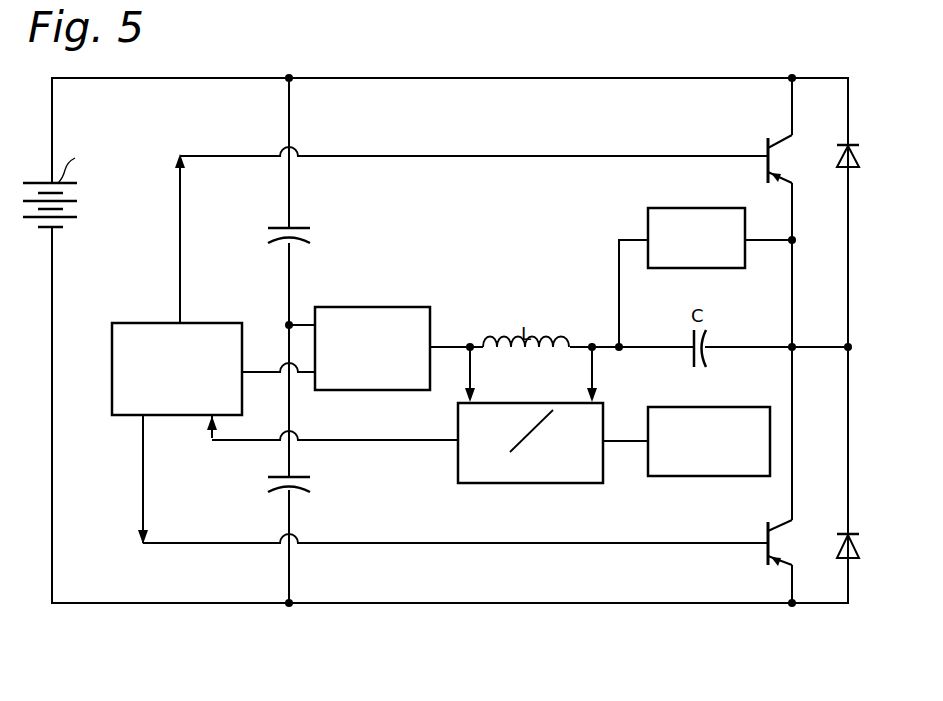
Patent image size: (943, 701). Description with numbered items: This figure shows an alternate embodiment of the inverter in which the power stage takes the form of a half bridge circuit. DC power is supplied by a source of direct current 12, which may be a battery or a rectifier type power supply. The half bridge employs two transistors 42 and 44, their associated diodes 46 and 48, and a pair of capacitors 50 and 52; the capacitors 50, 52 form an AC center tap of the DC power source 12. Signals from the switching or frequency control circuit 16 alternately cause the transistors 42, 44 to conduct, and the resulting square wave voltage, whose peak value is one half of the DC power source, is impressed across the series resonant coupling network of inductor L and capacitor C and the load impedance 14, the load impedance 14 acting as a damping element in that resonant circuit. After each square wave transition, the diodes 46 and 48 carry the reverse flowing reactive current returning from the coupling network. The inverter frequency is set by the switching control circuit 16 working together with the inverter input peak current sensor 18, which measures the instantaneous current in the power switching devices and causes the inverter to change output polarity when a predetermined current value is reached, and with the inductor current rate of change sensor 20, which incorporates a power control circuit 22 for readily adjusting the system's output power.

The source of direct current 12 is at (66, 222).
The load impedance 14 is at (672, 211).
The switching or frequency control circuit 16 is at (141, 327).
The inverter input peak current sensor 18 is at (348, 307).
The di/dt sensor 20 is at (506, 483).
The power control circuit 22 is at (700, 476).
The transistor 42 is at (767, 149).
The transistor 44 is at (765, 555).
The diode 46 is at (860, 152).
The diode 48 is at (858, 542).
The capacitor 50 is at (293, 226).
The capacitor 52 is at (298, 476).